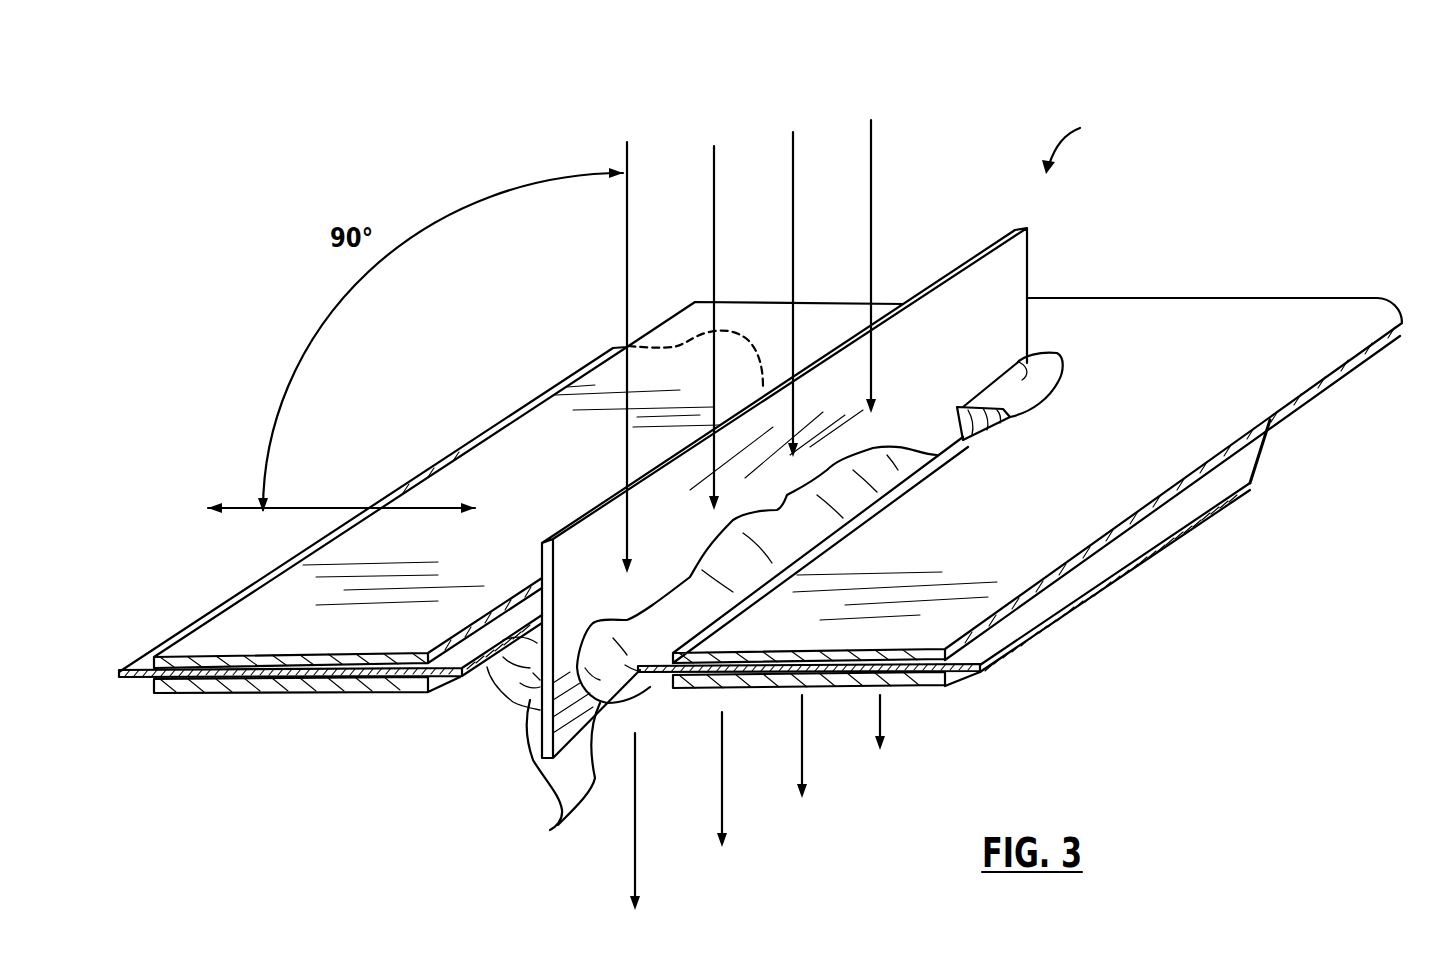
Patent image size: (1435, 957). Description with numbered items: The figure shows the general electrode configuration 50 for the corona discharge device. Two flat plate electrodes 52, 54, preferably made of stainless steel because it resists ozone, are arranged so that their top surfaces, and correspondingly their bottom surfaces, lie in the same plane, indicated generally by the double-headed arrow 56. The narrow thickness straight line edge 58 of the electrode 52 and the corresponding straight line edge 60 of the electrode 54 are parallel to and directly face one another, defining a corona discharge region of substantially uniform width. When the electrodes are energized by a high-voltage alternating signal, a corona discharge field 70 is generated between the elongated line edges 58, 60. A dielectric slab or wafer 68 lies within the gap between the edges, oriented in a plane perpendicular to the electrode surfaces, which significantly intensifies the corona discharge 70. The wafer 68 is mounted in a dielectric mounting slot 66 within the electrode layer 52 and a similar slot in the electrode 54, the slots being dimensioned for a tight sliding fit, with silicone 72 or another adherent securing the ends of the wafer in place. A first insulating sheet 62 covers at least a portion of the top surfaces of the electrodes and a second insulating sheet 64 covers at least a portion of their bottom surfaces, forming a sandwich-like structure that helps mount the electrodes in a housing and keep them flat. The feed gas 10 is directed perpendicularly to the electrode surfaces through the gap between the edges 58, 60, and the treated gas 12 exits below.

The feed gas 10 is at (747, 116).
The ozone gas (O3) 12 is at (722, 800).
The electrode configuration 50 is at (1081, 142).
The flat plate electrode 52 is at (1062, 616).
The flat plate electrode 54 is at (192, 617).
The double-headed arrow 56 is at (337, 507).
The narrow thickness straight line edge 58 is at (684, 580).
The narrow thickness straight line edge 60 is at (463, 672).
The first insulating sheet 62 is at (790, 338).
The second insulating sheet 64 is at (222, 700).
The dielectric mounting slot 66 is at (1058, 352).
The dielectric slab or wafer 68 is at (1013, 293).
The corona discharge field 70 is at (563, 783).
The silicone 72 is at (1018, 400).